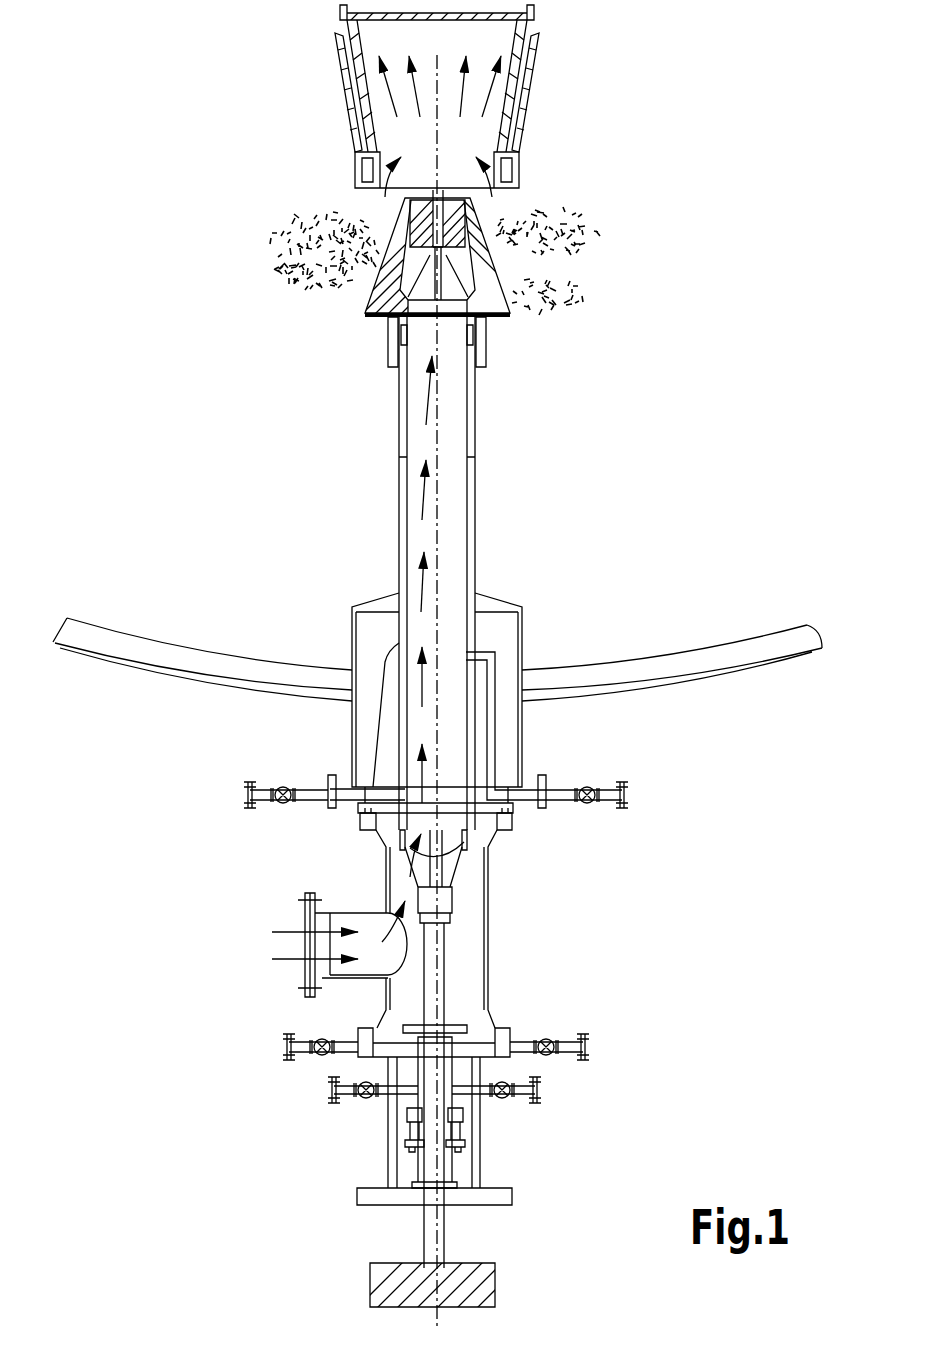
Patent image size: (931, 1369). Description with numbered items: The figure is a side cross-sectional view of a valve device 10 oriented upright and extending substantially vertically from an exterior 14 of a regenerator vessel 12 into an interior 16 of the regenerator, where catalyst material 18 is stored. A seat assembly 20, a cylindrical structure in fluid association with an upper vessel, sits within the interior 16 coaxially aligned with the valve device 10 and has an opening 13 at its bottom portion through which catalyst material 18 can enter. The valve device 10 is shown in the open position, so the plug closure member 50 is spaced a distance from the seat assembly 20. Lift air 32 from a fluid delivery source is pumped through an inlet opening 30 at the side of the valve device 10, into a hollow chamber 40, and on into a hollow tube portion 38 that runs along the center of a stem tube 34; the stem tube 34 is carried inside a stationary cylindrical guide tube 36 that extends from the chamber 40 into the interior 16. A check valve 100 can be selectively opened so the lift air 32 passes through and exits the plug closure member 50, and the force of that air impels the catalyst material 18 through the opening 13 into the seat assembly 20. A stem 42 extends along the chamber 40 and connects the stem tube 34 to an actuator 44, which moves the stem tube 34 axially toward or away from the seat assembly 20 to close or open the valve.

The valve device 10 is at (222, 320).
The regenerator vessel 12 is at (152, 638).
The opening 13 is at (368, 195).
The exterior 14 is at (748, 777).
The interior 16 is at (705, 497).
The catalyst material 18 is at (502, 222).
The seat assembly 20 is at (531, 90).
The inlet opening 30 is at (305, 910).
The lift air 32 is at (290, 960).
The stem tube 34 is at (466, 437).
The guide tube 36 is at (480, 568).
The hollow tube portion 38 is at (458, 520).
The chamber 40 is at (462, 937).
The stem 42 is at (445, 980).
The actuator 44 is at (487, 1290).
The plug closure member 50 is at (530, 309).
The check valve 100 is at (470, 276).